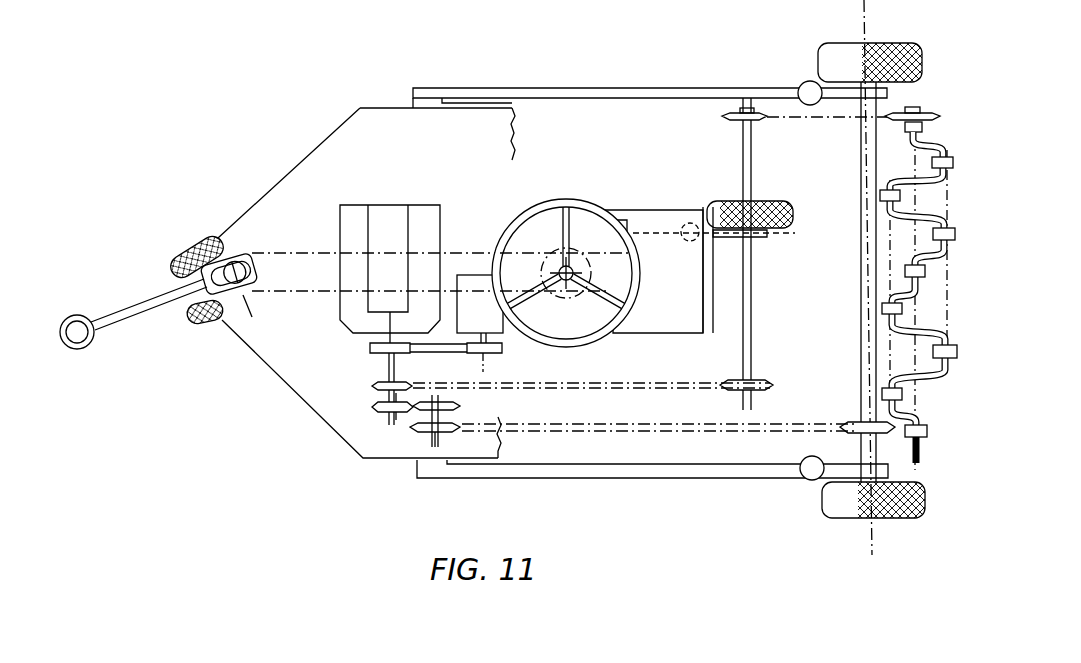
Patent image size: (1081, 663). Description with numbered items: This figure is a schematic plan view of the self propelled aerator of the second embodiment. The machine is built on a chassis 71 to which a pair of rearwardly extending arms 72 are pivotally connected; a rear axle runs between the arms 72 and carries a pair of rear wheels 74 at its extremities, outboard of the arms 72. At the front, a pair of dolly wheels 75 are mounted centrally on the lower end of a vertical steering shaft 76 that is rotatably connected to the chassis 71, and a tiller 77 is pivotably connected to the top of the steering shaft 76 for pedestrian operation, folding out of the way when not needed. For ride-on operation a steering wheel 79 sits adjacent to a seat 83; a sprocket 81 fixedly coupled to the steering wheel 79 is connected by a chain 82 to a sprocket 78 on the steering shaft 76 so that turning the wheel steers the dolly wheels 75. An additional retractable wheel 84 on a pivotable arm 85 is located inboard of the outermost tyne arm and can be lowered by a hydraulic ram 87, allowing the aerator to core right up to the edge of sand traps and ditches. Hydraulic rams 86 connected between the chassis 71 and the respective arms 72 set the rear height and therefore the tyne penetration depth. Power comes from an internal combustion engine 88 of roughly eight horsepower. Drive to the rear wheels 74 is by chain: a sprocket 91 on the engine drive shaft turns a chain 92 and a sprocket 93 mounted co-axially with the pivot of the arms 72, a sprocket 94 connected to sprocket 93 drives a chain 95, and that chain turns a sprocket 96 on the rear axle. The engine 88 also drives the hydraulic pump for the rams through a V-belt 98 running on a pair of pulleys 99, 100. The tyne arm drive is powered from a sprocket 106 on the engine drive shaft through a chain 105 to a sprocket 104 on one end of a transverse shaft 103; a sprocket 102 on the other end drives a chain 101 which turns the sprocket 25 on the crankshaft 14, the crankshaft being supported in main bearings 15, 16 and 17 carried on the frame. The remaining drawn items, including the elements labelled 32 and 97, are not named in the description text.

The crankshaft 14 is at (950, 152).
The main bearing 15 is at (924, 127).
The main bearing 16 is at (927, 271).
The main bearing 17 is at (929, 432).
The sprocket 25 is at (922, 112).
The pivot blocks 32 is at (957, 234).
The chassis 71 is at (295, 393).
The rearwardly extending arms 72 is at (607, 479).
The rear wheels 74 is at (829, 73).
The dolly wheels 75 is at (186, 250).
The vertical steering shaft 76 is at (225, 258).
The tiller 77 is at (158, 318).
The sprocket 78 is at (258, 268).
The steering wheel 79 is at (563, 200).
The sprocket 81 is at (567, 302).
The chain 82 is at (322, 253).
The seat 83 is at (652, 309).
The retractable wheel 84 is at (792, 206).
The pivotable arm 85 is at (724, 245).
The hydraulic rams 86 is at (801, 86).
The hydraulic ram 87 is at (686, 225).
The internal combustion engine 88 is at (378, 234).
The sprocket 91 is at (403, 413).
The chain 92 is at (402, 432).
The sprocket 93 is at (436, 447).
The sprocket 94 is at (458, 406).
The chain 95 is at (612, 430).
The sprocket 96 is at (890, 437).
The gearbox 97 is at (472, 312).
The V-belt 98 is at (442, 355).
The pulley 99 is at (370, 352).
The pulley 100 is at (497, 355).
The chain 101 is at (822, 120).
The sprocket 102 is at (735, 121).
The transverse shaft 103 is at (753, 340).
The sprocket 104 is at (766, 381).
The chain 105 is at (628, 383).
The sprocket 106 is at (380, 391).